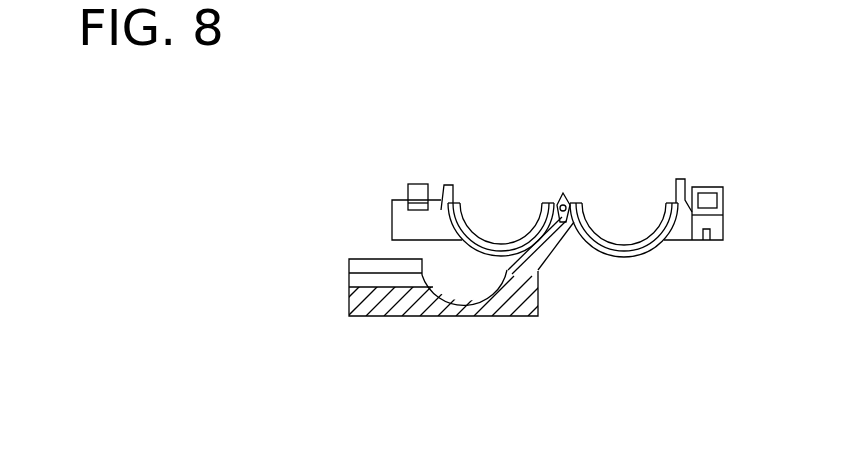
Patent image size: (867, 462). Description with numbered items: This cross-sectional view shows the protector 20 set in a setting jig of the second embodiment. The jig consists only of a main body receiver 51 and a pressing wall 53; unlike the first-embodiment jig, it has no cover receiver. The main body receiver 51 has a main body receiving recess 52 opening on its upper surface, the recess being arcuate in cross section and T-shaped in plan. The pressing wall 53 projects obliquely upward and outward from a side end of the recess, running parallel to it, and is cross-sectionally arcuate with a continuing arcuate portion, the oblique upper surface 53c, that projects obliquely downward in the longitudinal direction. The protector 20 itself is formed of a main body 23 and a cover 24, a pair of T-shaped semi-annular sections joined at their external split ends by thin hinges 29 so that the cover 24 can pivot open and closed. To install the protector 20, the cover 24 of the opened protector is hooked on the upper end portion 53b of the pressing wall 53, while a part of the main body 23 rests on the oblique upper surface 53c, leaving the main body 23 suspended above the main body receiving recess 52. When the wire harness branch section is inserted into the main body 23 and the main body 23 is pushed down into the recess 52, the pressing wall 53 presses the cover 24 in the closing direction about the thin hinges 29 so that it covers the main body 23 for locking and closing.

The protector 20 is at (381, 211).
The main body 23 is at (462, 253).
The cover 24 is at (642, 257).
The thin hinges 29 is at (560, 193).
The main body receiver 51 is at (452, 317).
The main body receiving recess 52 is at (465, 297).
The pressing wall 53 is at (571, 245).
The upper end portion of the pressing wall 53b is at (572, 212).
The oblique upper surface of the pressing wall 53c is at (533, 240).